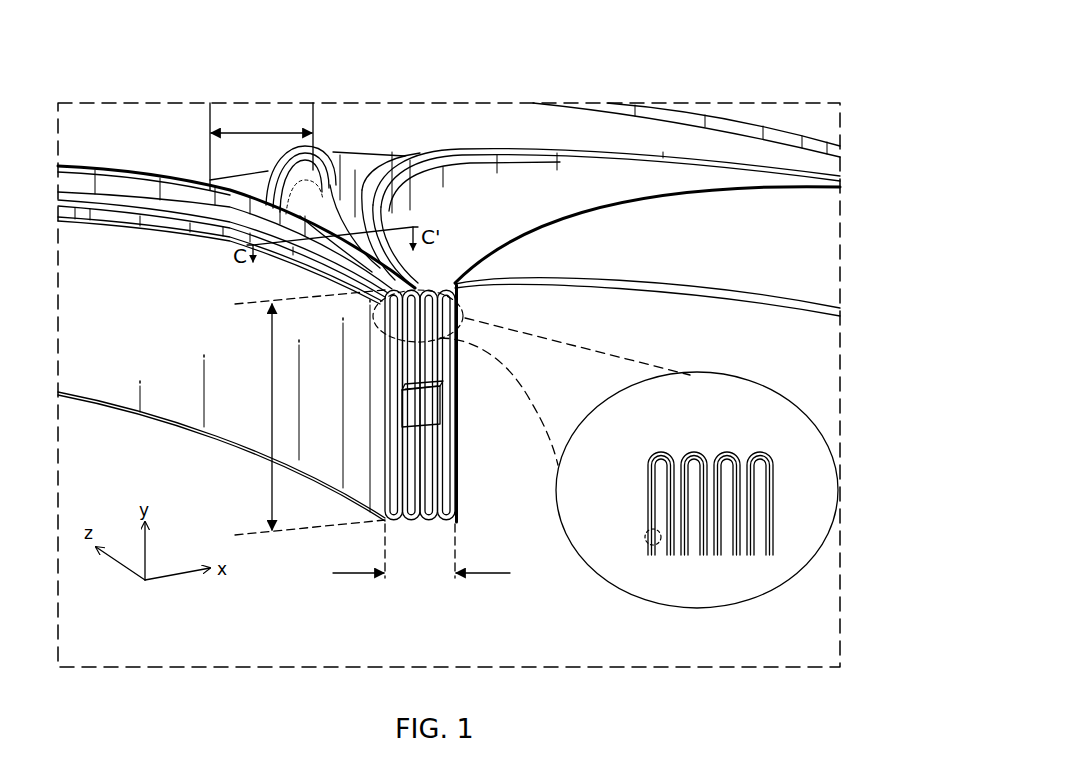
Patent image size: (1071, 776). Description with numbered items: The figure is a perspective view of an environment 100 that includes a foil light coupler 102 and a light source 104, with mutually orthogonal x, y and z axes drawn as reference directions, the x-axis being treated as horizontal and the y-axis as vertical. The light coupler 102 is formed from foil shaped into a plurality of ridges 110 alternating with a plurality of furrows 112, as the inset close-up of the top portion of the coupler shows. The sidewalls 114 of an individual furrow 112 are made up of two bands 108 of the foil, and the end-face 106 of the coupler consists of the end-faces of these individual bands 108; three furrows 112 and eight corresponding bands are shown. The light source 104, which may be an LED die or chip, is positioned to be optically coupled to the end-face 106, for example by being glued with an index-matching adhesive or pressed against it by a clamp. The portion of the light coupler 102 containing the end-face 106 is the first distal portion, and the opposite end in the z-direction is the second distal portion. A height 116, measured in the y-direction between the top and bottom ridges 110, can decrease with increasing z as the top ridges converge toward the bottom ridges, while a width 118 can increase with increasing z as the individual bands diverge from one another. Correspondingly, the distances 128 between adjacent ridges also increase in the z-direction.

The environment 100 is at (720, 63).
The foil light coupler 102 is at (198, 341).
The light source 104 is at (455, 405).
The end-face 106 is at (455, 360).
The bands 108 is at (455, 455).
The ridges 110 is at (418, 285).
The furrows 112 is at (342, 271).
The sidewalls 114 is at (677, 477).
The height 116 is at (310, 412).
The width 118 is at (350, 573).
The distances between adjacent ridges 128 is at (261, 146).